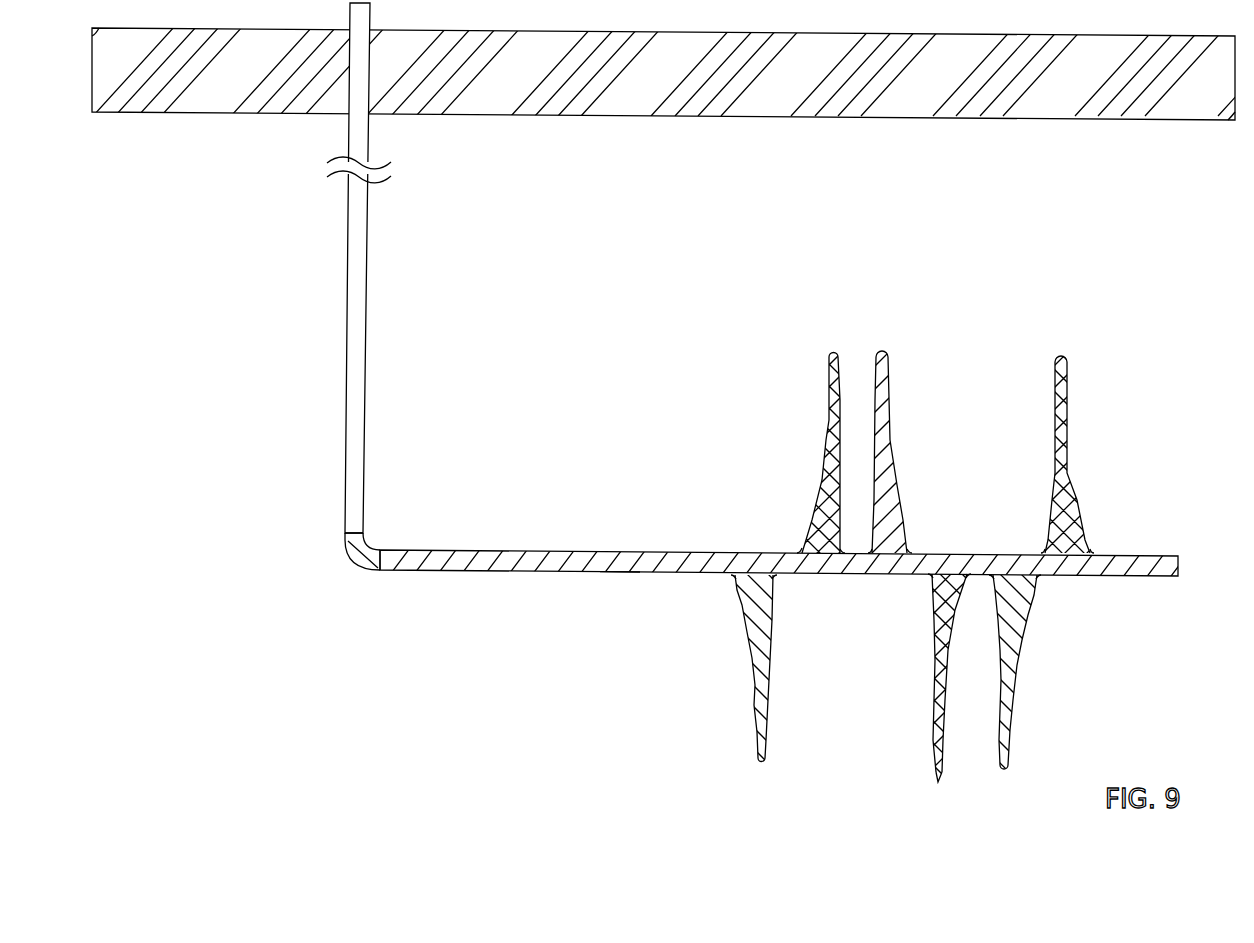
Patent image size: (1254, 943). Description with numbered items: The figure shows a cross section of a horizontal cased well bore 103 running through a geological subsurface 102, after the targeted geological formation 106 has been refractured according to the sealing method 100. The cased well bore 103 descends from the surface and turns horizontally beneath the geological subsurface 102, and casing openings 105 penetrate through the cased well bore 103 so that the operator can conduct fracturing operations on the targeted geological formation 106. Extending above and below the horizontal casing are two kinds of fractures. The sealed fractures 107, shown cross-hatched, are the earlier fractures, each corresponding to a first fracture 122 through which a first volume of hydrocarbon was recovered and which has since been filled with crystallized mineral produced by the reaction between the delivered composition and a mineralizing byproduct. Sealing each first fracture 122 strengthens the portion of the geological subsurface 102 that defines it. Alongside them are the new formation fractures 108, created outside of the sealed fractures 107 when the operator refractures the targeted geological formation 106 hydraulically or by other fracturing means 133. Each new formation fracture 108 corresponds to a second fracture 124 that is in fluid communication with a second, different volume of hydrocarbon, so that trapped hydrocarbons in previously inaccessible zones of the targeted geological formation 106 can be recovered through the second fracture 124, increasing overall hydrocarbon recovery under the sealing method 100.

The sealing method 100 is at (270, 338).
The geological subsurface 102 is at (892, 186).
The cased well bore 103 is at (496, 550).
The casing openings 105 is at (803, 550).
The targeted geological formation 106 is at (1017, 352).
The sealed fractures 107 is at (826, 462).
The new formation fractures 108 is at (892, 438).
The first fracture 122 is at (834, 356).
The second fracture 124 is at (889, 355).
The fracturing means 133 is at (620, 563).